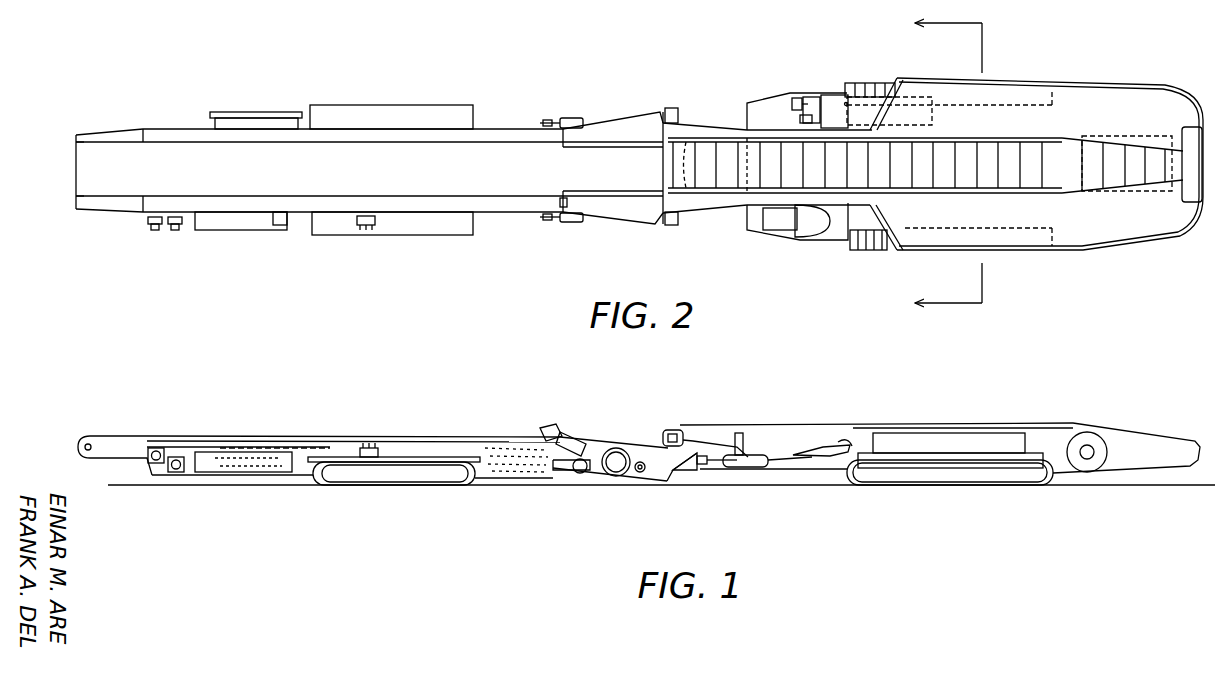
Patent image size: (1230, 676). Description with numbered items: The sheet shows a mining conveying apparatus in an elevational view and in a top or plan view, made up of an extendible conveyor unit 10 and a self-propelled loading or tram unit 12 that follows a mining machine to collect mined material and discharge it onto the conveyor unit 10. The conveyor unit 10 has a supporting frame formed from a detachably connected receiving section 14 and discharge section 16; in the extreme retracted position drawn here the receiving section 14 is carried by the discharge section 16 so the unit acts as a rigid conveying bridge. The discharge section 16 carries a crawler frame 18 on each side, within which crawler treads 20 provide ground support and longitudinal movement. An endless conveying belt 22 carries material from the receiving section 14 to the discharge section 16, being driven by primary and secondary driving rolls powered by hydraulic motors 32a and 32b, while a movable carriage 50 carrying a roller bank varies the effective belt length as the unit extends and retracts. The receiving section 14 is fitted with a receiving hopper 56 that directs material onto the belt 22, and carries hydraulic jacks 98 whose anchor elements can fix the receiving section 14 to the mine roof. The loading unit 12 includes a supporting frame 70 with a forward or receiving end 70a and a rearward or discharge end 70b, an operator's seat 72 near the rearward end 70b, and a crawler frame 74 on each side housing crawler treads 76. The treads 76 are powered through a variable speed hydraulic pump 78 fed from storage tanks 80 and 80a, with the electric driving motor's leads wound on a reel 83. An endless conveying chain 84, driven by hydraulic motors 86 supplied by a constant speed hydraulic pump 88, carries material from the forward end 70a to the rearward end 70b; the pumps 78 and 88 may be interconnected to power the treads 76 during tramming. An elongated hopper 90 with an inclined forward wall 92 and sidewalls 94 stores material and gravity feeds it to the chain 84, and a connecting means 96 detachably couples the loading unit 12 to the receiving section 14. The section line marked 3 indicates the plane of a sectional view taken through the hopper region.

In FIG. 2, the conveyor unit 10 is at (158, 66).
In FIG. 1, the conveyor unit 10 is at (258, 405).
In FIG. 2, the loading or tram unit 12 is at (750, 85).
In FIG. 1, the loading or tram unit 12 is at (887, 408).
In FIG. 2, the receiving section 14 is at (617, 110).
In FIG. 1, the receiving section 14 is at (599, 432).
In FIG. 2, the discharge section 16 is at (111, 128).
In FIG. 1, the discharge section 16 is at (121, 430).
In FIG. 2, the crawler frame 18 is at (398, 118).
In FIG. 1, the crawler frame 18 is at (405, 458).
In FIG. 1, the crawler treads 20 is at (446, 486).
In FIG. 2, the endless conveying belt 22 is at (398, 180).
In FIG. 2, the hydraulic motor 32a is at (155, 231).
In FIG. 1, the hydraulic motor 32a is at (153, 476).
In FIG. 2, the hydraulic motor 32b is at (176, 231).
In FIG. 1, the hydraulic motor 32b is at (176, 456).
In FIG. 1, the movable carriage 50 is at (260, 485).
In FIG. 2, the receiving hopper 56 is at (636, 203).
In FIG. 1, the receiving hopper 56 is at (660, 480).
In FIG. 1, the supporting frame 70 is at (810, 436).
In FIG. 1, the forward or receiving end 70a is at (1160, 448).
In FIG. 1, the rearward or discharge end 70b is at (763, 445).
In FIG. 2, the operator's station or seat 72 is at (811, 222).
In FIG. 1, the operator's station or seat 72 is at (812, 476).
In FIG. 1, the crawler frame 74 is at (924, 469).
In FIG. 2, the crawler treads 76 is at (876, 241).
In FIG. 1, the crawler treads 76 is at (975, 486).
In FIG. 2, the variable speed hydraulic pump 78 is at (800, 96).
In FIG. 2, the storage tank or reservoir 80 is at (836, 95).
In FIG. 1, the storage tank or reservoir 80a is at (978, 432).
In FIG. 1, the reel 83 is at (1088, 432).
In FIG. 2, the endless conveying chain 84 is at (708, 178).
In FIG. 2, the hydraulic motors 86 is at (671, 108).
In FIG. 1, the hydraulic motors 86 is at (673, 430).
In FIG. 2, the constant speed hydraulic pump 88 is at (811, 96).
In FIG. 2, the elongated hopper 90 is at (1050, 76).
In FIG. 2, the forward wall 92 is at (1192, 128).
In FIG. 2, the sidewalls 94 is at (1120, 95).
In FIG. 1, the connecting means 96 is at (720, 474).
In FIG. 2, the hydraulic jack or motor 98 is at (571, 223).
In FIG. 2, the section line 3- 3 is at (960, 166).